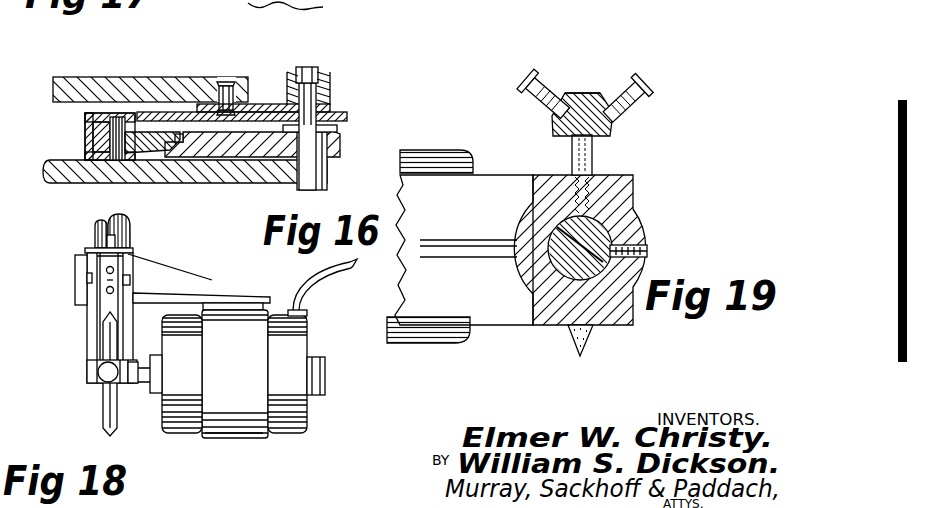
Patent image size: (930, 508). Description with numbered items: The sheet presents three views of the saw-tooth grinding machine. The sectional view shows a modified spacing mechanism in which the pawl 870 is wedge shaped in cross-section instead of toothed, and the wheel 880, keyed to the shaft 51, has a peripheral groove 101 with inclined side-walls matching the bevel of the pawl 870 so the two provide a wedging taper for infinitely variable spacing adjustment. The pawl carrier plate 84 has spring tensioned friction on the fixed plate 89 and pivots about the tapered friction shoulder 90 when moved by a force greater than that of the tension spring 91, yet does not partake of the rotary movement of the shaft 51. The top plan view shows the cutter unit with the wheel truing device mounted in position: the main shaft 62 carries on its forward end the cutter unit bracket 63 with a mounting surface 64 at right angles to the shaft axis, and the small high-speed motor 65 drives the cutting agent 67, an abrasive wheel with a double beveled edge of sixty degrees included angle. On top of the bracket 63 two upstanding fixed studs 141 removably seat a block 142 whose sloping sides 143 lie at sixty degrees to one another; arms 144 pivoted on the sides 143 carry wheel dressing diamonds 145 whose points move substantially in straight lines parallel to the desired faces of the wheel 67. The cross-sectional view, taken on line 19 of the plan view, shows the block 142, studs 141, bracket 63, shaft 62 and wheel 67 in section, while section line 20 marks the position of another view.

In FIG. 16, the pawl 870 is at (148, 137).
In FIG. 16, the peripheral groove 101 is at (178, 140).
In FIG. 16, the tapered friction shoulder 90 is at (293, 110).
In FIG. 16, the tension spring 91 is at (298, 95).
In FIG. 16, the shaft 51 is at (313, 67).
In FIG. 16, the fixed plate 89 is at (343, 117).
In FIG. 16, the pawl carrier plate 84 is at (340, 122).
In FIG. 16, the wheel 880 is at (327, 145).
In FIG. 18, the main shaft 62 is at (123, 205).
In FIG. 19, the main shaft 62 is at (593, 233).
In FIG. 18, the upstanding fixed studs 141 is at (113, 269).
In FIG. 19, the upstanding fixed studs 141 is at (592, 144).
In FIG. 18, the mounting surface 64 is at (182, 310).
In FIG. 18, the cutter unit bracket 63 is at (82, 307).
In FIG. 19, the cutter unit bracket 63 is at (492, 197).
In FIG. 18, the block 142 is at (108, 293).
In FIG. 19, the block 142 is at (587, 93).
In FIG. 18, the wheel dressing diamonds 145 is at (112, 373).
In FIG. 18, the cutting agent 67 is at (118, 413).
In FIG. 19, the cutting agent 67 is at (593, 340).
In FIG. 18, the motor 65 is at (215, 417).
In FIG. 19, the motor 65 is at (463, 338).
In FIG. 19, the sides 143 is at (553, 118).
In FIG. 19, the arms 144 is at (557, 88).
In FIG. 18, the section line 20 is at (163, 232).
In FIG. 18, the section line 19 is at (183, 282).